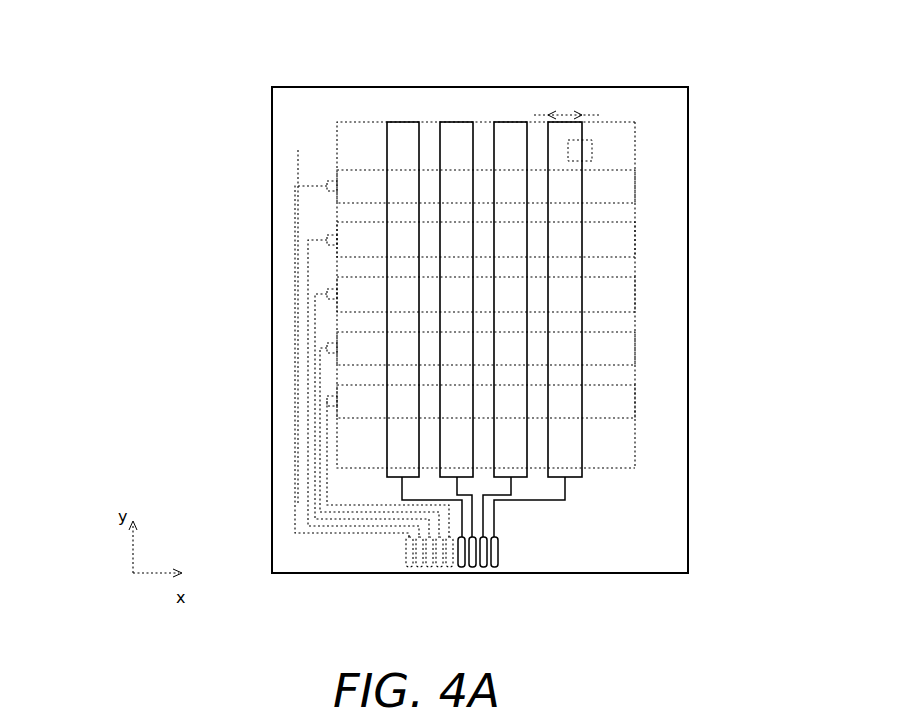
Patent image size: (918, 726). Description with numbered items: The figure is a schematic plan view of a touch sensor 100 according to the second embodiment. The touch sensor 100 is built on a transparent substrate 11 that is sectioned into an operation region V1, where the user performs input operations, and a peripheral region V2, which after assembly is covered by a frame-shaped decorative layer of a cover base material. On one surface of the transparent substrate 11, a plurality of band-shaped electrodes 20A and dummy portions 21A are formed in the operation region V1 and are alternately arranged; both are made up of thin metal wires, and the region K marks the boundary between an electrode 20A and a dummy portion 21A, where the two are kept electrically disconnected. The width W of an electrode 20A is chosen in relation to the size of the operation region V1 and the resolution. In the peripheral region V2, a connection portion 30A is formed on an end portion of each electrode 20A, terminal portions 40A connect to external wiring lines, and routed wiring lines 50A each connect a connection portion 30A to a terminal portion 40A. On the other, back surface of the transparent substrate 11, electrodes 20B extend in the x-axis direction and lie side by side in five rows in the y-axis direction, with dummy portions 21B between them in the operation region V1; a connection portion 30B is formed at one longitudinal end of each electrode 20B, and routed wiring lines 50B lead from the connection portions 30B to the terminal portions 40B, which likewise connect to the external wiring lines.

The touch sensor 100 is at (289, 72).
The transparent substrate 11 is at (670, 200).
The electrodes 20A is at (403, 135).
The dummy portions 21A is at (426, 132).
The electrodes 20B is at (350, 180).
The dummy portions 21B is at (352, 222).
The connection portions 30A is at (583, 478).
The connection portions 30B is at (338, 341).
The terminal portions 40A is at (512, 556).
The terminal portions 40B is at (402, 556).
The routed wiring lines 50A is at (572, 494).
The routed wiring lines 50B is at (296, 383).
The operation region V1 is at (637, 130).
The peripheral region V2 is at (633, 100).
The region K is at (592, 148).
The width of the electrode W is at (567, 105).